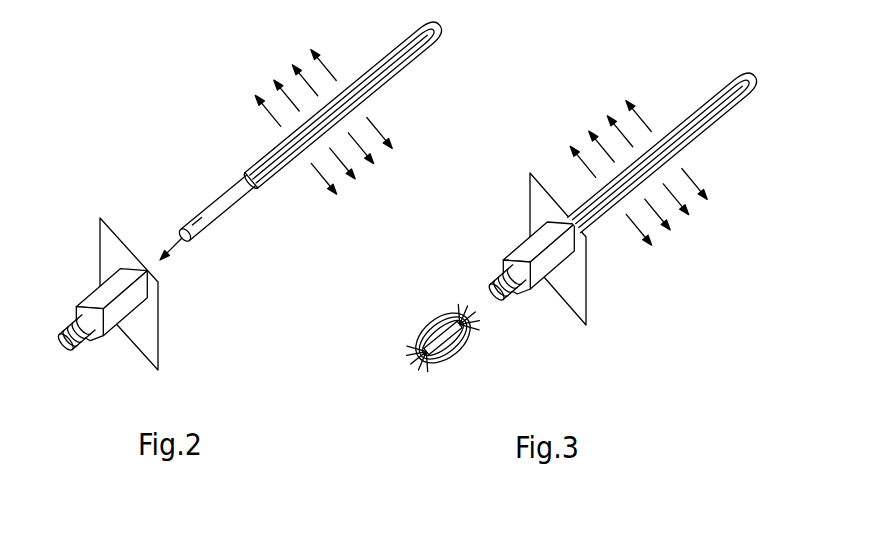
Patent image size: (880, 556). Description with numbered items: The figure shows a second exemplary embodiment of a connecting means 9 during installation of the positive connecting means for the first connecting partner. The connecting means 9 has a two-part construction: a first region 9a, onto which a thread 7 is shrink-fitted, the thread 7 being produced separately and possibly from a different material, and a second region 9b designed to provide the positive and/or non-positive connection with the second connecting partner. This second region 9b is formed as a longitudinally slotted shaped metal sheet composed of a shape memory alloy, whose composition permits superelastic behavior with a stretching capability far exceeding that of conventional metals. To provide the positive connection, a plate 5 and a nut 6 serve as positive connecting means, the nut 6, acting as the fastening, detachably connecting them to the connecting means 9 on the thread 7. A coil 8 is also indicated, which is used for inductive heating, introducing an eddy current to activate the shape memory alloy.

In FIG. 3, the plate 5 is at (538, 213).
In FIG. 3, the nut 6 is at (525, 250).
In FIG. 2, the thread 7 is at (73, 318).
In FIG. 3, the thread 7 is at (502, 277).
In FIG. 3, the coil 8 is at (423, 298).
In FIG. 3, the connecting means 9 is at (663, 202).
In FIG. 2, the first region 9a is at (233, 257).
In FIG. 3, the first region 9a is at (534, 322).
In FIG. 2, the blade portion 9b is at (397, 70).
In FIG. 3, the blade portion 9b is at (717, 115).